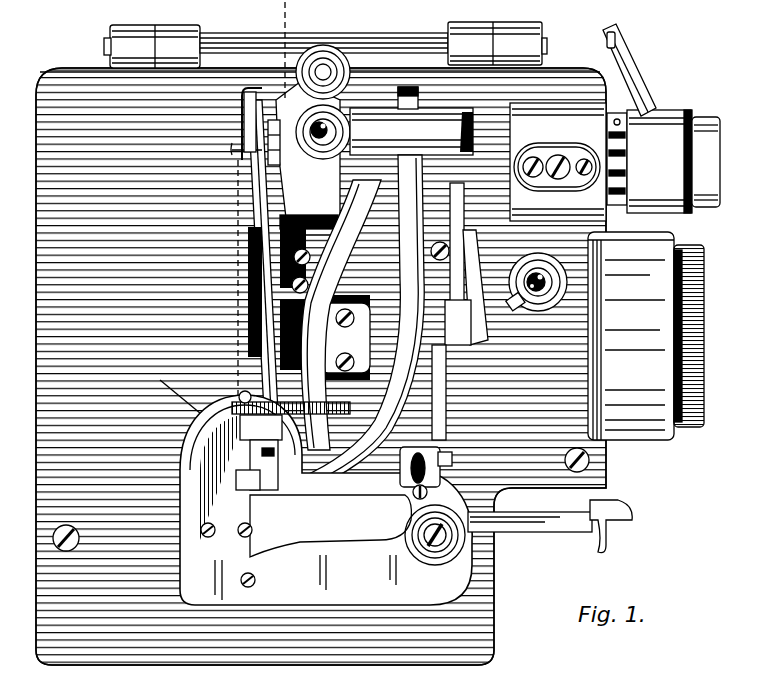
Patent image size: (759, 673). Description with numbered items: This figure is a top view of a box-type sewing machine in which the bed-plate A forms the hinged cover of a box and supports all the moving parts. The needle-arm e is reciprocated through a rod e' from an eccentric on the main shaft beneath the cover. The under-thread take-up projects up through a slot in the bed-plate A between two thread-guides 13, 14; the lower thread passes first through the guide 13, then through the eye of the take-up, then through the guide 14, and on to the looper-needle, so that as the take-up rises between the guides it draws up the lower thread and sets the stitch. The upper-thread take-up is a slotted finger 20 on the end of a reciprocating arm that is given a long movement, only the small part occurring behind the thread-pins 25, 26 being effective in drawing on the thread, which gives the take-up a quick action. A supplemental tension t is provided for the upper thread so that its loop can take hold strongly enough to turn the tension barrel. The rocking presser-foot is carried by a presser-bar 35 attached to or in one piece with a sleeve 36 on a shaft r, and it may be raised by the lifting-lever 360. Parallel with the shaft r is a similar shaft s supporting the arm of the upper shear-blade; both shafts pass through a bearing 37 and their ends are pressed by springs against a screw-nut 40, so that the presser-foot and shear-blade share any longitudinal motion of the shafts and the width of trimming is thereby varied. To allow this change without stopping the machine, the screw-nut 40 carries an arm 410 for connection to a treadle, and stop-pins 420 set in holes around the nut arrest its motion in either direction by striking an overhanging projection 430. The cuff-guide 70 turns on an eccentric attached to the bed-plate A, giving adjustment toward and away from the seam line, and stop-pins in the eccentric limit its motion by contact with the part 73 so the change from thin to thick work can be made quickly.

The bed-plate A is at (43, 415).
The slotted finger 20 is at (276, 95).
The thread-pin 26 is at (233, 150).
The thread-pin 25 is at (287, 150).
The supplemental tension t is at (330, 55).
The sleeve 36 is at (341, 315).
The presser-bar 35 is at (348, 262).
The shaft s is at (475, 128).
The shaft r is at (466, 200).
The lifting-lever 360 is at (520, 318).
The bearing 37 is at (558, 162).
The overhanging projection 430 is at (608, 167).
The stop-pins 420 is at (619, 118).
The screw-nut 40 is at (673, 161).
The arm 410 is at (636, 50).
The part 73 is at (405, 495).
The thread-guide 14 is at (403, 463).
The thread-guide 13 is at (444, 468).
The needle-arm e is at (278, 413).
The rod e' is at (330, 337).
The cuff-guide 70 is at (537, 530).